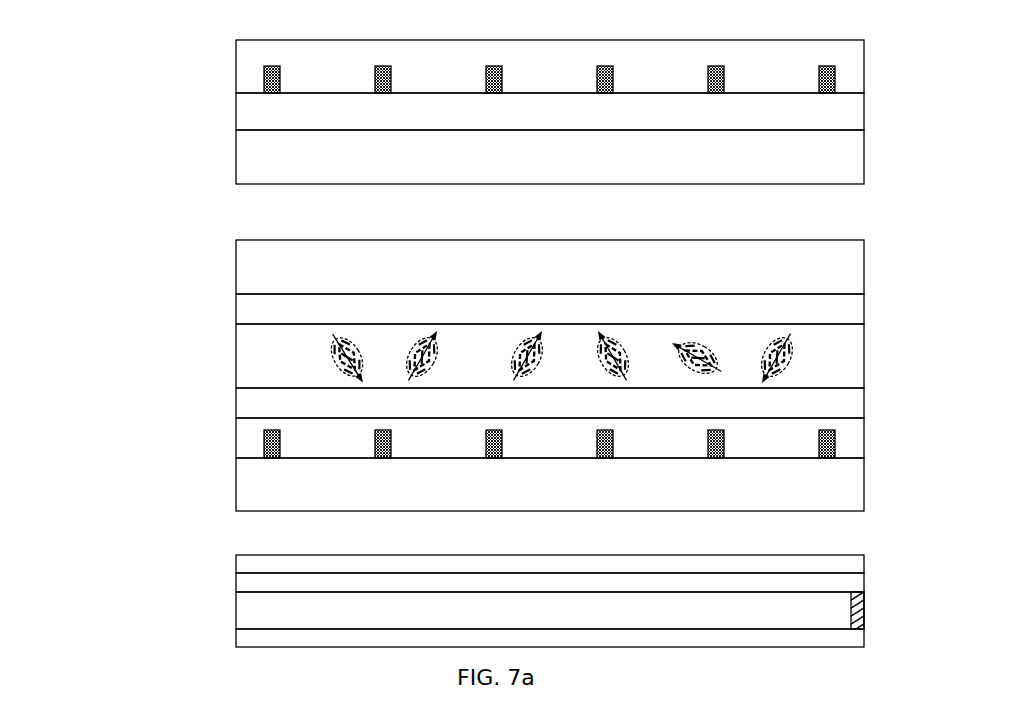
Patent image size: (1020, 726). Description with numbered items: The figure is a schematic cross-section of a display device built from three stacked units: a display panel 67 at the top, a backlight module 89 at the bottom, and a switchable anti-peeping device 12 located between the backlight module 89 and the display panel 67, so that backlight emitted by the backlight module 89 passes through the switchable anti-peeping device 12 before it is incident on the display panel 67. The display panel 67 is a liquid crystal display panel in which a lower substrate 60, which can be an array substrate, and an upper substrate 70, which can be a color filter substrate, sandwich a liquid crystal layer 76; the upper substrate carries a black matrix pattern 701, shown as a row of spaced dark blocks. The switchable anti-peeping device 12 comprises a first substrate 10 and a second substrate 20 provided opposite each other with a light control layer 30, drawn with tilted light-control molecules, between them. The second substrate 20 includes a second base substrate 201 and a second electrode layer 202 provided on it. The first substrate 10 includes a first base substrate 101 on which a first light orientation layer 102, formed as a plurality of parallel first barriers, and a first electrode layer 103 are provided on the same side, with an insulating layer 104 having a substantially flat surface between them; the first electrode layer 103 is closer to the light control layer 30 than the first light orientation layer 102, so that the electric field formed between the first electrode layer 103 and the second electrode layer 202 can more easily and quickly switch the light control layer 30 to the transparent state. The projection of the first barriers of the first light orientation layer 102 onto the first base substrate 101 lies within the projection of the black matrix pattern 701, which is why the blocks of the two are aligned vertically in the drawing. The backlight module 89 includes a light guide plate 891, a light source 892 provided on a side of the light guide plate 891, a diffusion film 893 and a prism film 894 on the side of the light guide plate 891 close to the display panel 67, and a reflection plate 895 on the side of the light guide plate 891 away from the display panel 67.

The display panel 67 is at (490, 112).
The upper substrate 70 is at (840, 55).
The black matrix pattern 701 is at (835, 80).
The liquid crystal layer 76 is at (840, 113).
The lower substrate 60 is at (840, 156).
The switchable anti-peeping device 12 is at (504, 359).
The second substrate 20 is at (571, 265).
The second base substrate 201 is at (855, 286).
The second electrode layer 202 is at (855, 313).
The light control layer 30 is at (263, 356).
The first substrate 10 is at (561, 446).
The first electrode layer 103 is at (849, 403).
The insulating layer 104 is at (846, 434).
The first light orientation layer 102 is at (835, 445).
The first base substrate 101 is at (855, 487).
The backlight module 89 is at (498, 603).
The prism film 894 is at (843, 559).
The diffusion film 893 is at (847, 578).
The light source 892 is at (866, 597).
The light guide plate 891 is at (843, 616).
The reflection plate 895 is at (843, 638).